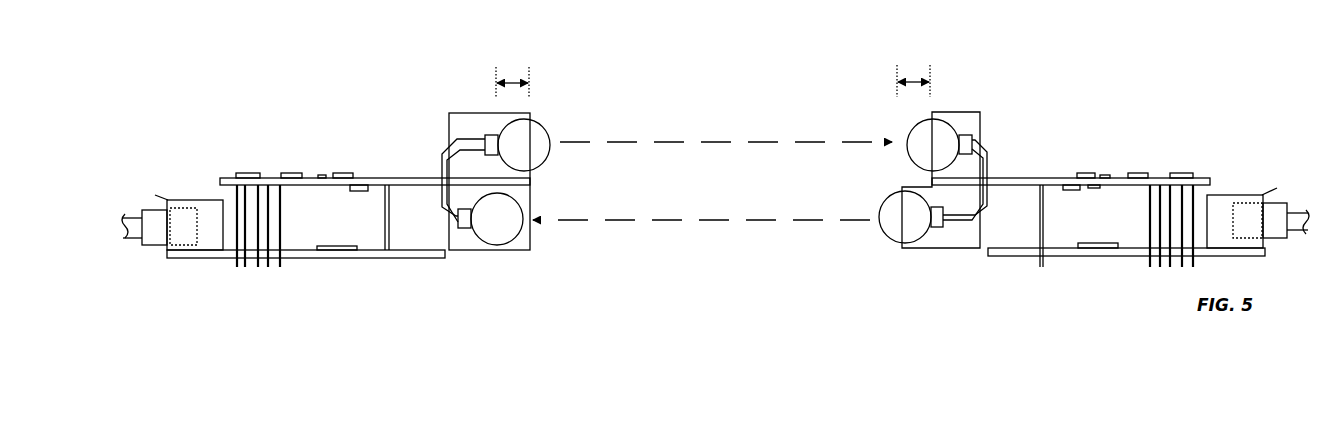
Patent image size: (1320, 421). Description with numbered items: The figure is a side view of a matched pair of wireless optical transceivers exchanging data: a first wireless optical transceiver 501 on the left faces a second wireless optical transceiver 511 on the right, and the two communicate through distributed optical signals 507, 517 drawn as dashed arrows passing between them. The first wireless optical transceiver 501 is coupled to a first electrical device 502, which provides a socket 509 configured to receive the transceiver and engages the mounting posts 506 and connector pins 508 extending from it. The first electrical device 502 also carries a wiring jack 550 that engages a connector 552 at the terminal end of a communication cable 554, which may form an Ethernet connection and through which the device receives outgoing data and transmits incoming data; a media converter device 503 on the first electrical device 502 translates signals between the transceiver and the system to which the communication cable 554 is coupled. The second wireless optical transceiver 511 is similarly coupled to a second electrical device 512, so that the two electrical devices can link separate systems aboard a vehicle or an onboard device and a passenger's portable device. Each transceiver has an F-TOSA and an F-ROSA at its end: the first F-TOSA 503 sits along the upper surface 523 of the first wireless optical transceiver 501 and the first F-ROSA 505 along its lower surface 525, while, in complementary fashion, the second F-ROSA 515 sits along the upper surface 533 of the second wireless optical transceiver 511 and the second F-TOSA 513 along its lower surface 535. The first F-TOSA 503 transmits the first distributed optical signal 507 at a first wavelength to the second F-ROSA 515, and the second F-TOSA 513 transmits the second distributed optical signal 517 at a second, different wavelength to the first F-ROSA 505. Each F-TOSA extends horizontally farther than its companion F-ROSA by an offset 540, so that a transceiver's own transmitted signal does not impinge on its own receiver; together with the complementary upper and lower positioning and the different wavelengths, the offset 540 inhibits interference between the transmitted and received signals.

The first wireless optical transceiver 501 is at (340, 108).
The first electrical device 502 is at (440, 260).
The first F-TOSA 503 is at (537, 178).
The first F-ROSA 505 is at (514, 255).
The mounting posts 506 is at (387, 262).
The first distributed optical signal 507 is at (732, 143).
The connector pins 508 is at (242, 266).
The socket 509 is at (292, 240).
The second wireless optical transceiver 511 is at (1026, 104).
The second electrical device 512 is at (1010, 260).
The second F-TOSA 513 is at (888, 248).
The second F-ROSA 515 is at (906, 166).
The second distributed optical signal 517 is at (700, 222).
The upper surface 523 is at (372, 177).
The lower surface 525 is at (380, 188).
The upper surface 533 is at (1060, 176).
The lower surface 535 is at (1050, 190).
The offset 540 is at (514, 76).
The wiring jack 550 is at (218, 199).
The connector 552 is at (150, 209).
The communication cable 554 is at (137, 240).